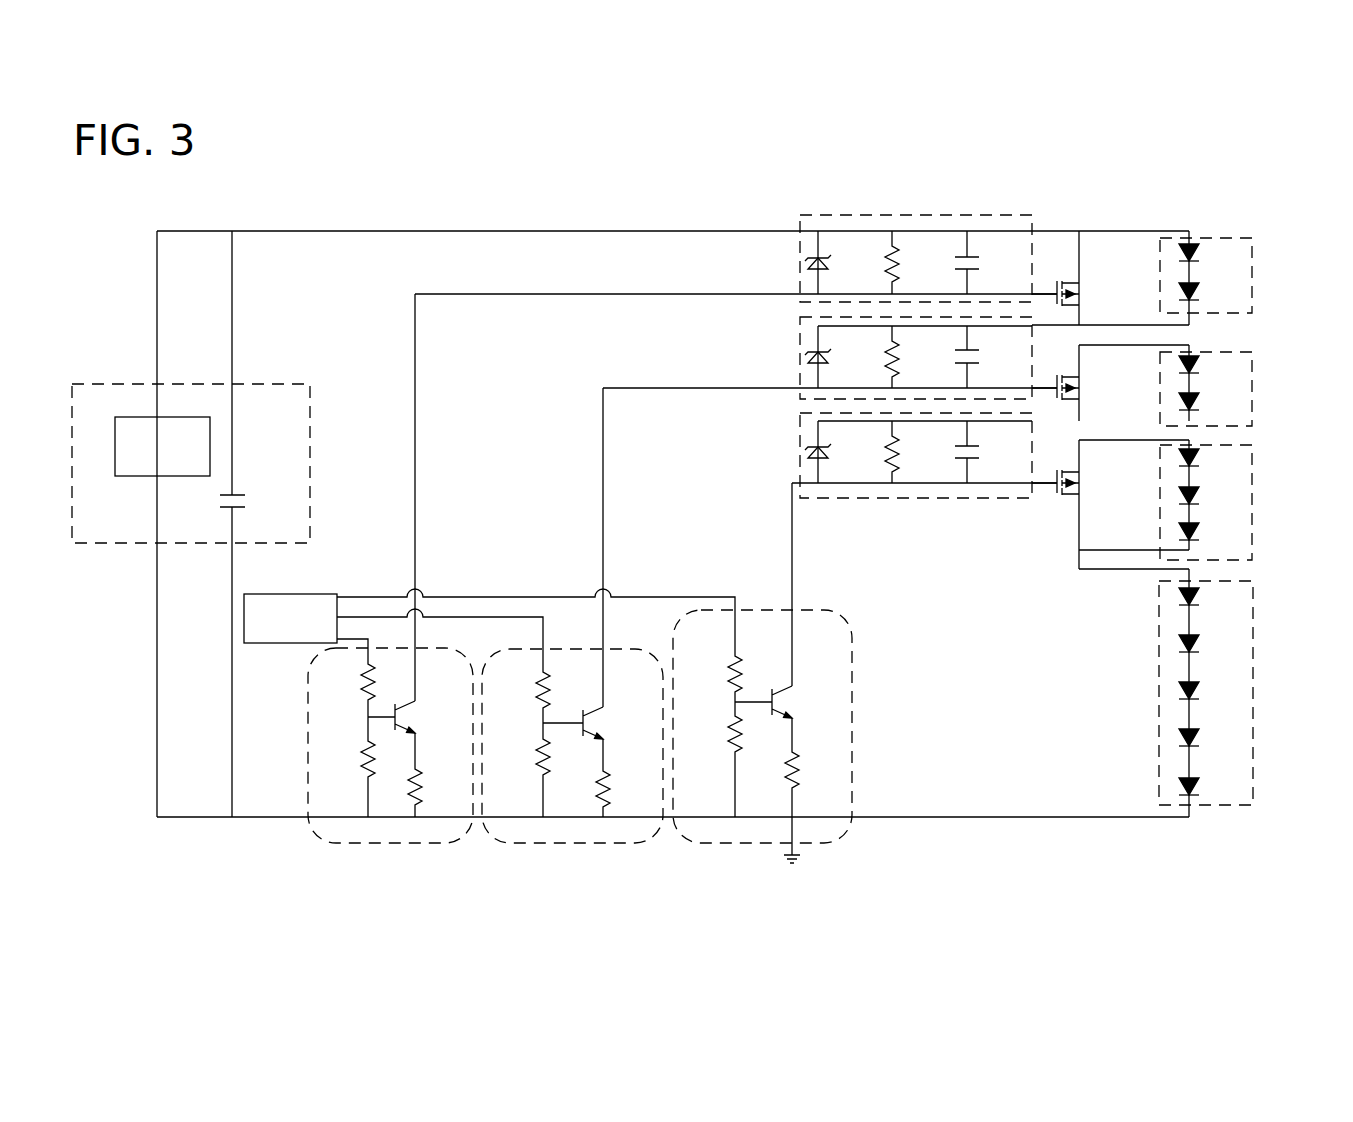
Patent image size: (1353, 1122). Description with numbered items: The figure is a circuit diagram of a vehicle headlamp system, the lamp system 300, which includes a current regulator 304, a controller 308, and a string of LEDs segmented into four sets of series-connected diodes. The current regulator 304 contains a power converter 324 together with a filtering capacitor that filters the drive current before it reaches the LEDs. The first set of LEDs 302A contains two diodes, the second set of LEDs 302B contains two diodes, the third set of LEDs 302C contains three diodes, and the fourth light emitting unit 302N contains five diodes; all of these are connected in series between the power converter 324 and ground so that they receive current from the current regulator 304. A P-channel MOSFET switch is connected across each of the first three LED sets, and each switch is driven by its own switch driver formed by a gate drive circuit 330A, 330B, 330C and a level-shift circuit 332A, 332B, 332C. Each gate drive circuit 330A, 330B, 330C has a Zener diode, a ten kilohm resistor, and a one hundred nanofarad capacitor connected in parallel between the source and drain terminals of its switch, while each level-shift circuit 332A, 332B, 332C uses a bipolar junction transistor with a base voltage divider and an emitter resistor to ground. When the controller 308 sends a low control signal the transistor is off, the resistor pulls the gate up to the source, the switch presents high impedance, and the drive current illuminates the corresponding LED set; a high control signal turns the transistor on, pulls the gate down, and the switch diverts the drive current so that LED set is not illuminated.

The lamp system 300 is at (451, 181).
The current regulator 304 is at (117, 382).
The power converter 324 is at (142, 477).
The controller 308 is at (314, 593).
The gate drive circuit 330A is at (802, 268).
The gate drive circuit 330B is at (802, 362).
The gate drive circuit 330C is at (802, 457).
The first set of LEDs 302A is at (1255, 262).
The second set of LEDs 302B is at (1255, 379).
The third set of LEDs 302C is at (1255, 477).
The fourth light emitting unit 302N is at (1253, 755).
The level-shift circuit 332A is at (385, 846).
The level-shift circuit 332B is at (575, 846).
The level-shift circuit 332C is at (725, 846).